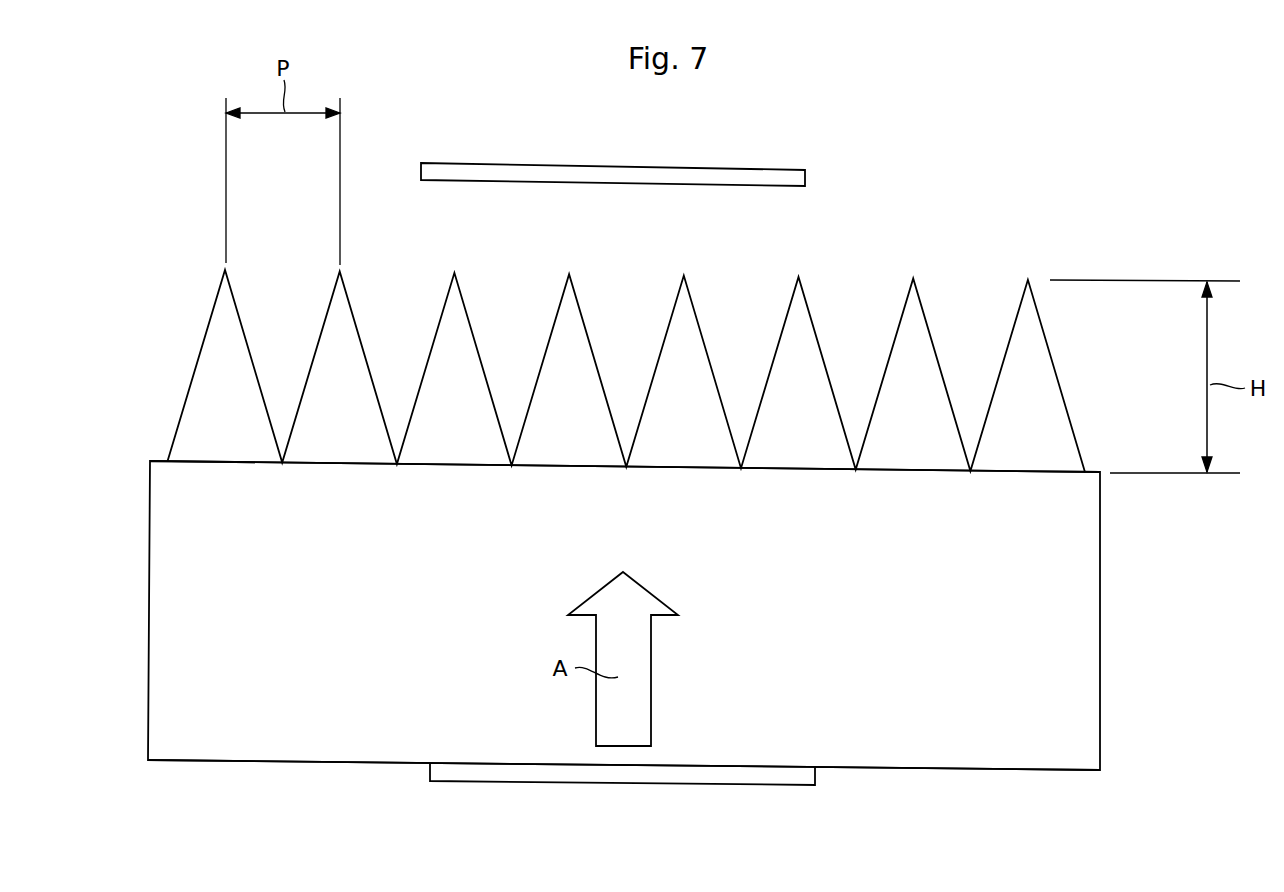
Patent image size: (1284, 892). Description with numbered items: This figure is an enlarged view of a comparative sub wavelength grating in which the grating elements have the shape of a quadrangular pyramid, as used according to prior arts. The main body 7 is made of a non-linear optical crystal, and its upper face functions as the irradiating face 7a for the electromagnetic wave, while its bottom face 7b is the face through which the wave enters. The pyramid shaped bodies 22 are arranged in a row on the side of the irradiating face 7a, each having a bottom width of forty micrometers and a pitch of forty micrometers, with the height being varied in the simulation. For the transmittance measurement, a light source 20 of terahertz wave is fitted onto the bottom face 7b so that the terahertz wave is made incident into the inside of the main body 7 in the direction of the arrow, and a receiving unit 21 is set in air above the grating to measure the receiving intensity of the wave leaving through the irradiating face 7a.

The main body 7 is at (1087, 566).
The irradiating face 7a is at (1092, 470).
The bottom face 7b is at (1048, 772).
The light source 20 is at (770, 775).
The receiving unit 21 is at (678, 175).
The prisms (triangular projections) 22 is at (473, 275).